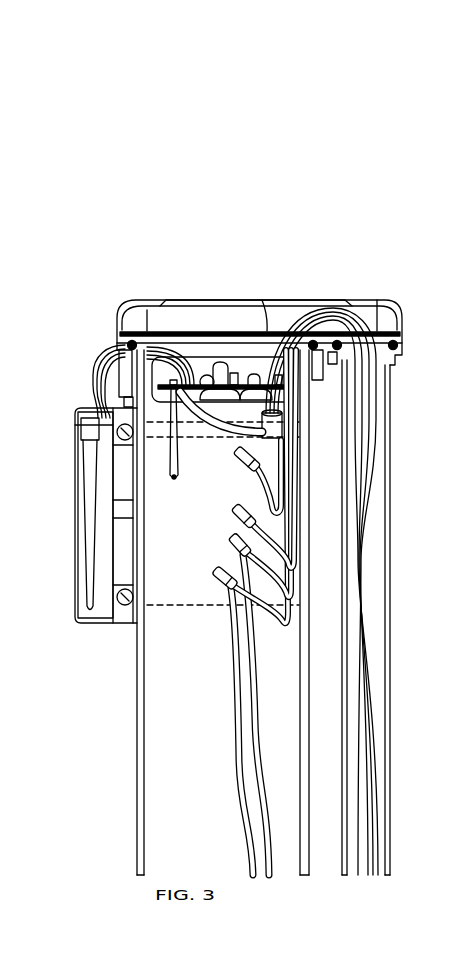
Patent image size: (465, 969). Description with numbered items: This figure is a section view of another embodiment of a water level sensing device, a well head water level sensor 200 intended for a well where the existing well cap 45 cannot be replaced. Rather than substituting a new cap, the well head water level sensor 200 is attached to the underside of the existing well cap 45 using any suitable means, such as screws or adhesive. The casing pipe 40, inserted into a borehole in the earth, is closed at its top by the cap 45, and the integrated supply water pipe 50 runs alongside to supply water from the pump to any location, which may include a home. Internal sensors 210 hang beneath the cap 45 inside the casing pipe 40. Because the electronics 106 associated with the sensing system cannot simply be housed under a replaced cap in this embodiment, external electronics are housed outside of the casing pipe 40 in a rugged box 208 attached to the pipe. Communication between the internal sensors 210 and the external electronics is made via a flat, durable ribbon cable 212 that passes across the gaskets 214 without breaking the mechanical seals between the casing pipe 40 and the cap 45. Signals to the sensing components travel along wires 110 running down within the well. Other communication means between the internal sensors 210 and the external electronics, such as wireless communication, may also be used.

The casing pipe 40 is at (138, 693).
The existing well cap 45 is at (305, 299).
The integrated supply water pipe 50 is at (390, 477).
The electronics 106 is at (112, 577).
The wires 110 is at (358, 623).
The well head water level sensor 200 is at (322, 214).
The rugged box 208 is at (74, 585).
The internal sensors 210 is at (219, 362).
The ribbon cable 212 is at (98, 347).
The gaskets 214 is at (132, 338).